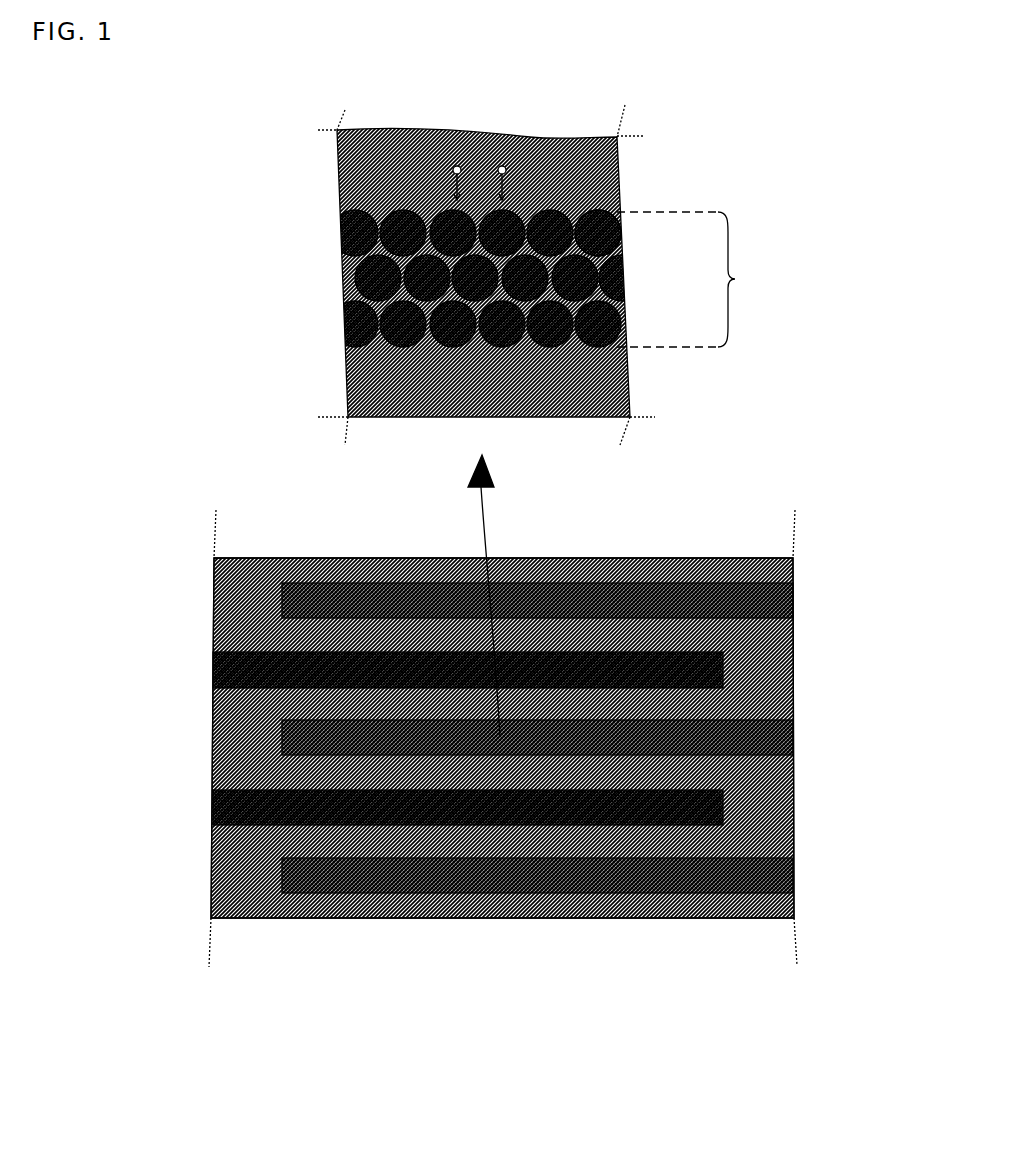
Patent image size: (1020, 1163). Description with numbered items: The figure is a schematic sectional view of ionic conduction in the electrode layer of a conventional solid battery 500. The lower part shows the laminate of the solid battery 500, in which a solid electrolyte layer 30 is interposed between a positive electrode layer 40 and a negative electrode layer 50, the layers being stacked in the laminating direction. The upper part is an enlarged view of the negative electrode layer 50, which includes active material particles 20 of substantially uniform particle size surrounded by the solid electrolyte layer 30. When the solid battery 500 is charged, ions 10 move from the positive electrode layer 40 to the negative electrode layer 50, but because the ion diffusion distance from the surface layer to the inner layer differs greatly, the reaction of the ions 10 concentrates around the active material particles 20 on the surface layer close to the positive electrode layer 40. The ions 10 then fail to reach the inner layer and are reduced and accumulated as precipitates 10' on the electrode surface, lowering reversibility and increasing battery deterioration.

The ions 10 is at (534, 134).
The precipitates 10' is at (647, 207).
The active material particles 20 is at (620, 277).
The solid electrolyte layer 30 is at (600, 387).
The positive electrode layer 40 is at (707, 670).
The negative electrode layer 50 is at (833, 739).
The solid battery 500 is at (547, 706).